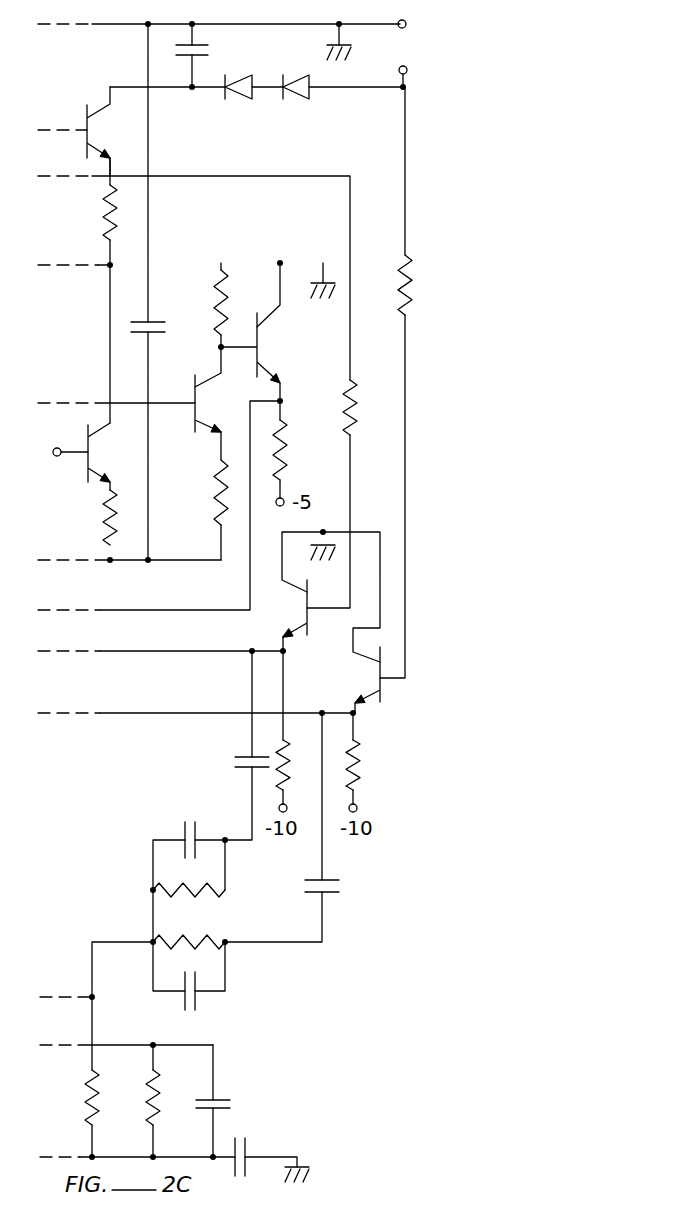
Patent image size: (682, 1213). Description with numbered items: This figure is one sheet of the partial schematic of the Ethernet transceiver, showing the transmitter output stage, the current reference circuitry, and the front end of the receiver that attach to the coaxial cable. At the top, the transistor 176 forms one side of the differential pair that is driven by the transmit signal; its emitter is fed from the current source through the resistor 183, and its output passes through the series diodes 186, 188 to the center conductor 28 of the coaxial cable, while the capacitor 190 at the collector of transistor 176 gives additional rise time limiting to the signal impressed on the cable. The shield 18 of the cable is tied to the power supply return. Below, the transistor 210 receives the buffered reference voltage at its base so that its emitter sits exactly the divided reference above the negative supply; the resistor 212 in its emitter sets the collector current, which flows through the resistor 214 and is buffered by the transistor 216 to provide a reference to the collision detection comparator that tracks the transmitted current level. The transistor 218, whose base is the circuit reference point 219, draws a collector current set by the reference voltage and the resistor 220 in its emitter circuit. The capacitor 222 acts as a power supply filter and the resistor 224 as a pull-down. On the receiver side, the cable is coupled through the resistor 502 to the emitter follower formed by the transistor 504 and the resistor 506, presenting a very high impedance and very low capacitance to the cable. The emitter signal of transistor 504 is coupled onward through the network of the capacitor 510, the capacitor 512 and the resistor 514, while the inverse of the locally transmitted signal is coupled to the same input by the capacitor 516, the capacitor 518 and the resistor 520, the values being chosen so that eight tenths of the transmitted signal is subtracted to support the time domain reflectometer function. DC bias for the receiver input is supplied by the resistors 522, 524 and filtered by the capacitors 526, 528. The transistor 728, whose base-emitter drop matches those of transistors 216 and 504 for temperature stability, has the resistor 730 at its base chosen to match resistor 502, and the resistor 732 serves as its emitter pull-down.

The shield 18 is at (416, 24).
The center conductor 28 is at (418, 69).
The transistor 176 is at (85, 112).
The resistor 183 is at (108, 232).
The diode 186 is at (234, 99).
The diode 188 is at (300, 100).
The capacitor 190 is at (198, 50).
The transistor 210 is at (193, 387).
The resistor 212 is at (215, 497).
The resistor 214 is at (218, 300).
The transistor 216 is at (262, 362).
The transistor 218 is at (92, 452).
The circuit reference point 219 is at (58, 448).
The resistor 220 is at (108, 525).
The capacitor 222 is at (150, 322).
The resistor 224 is at (284, 478).
The resistor 502 is at (400, 268).
The transistor 504 is at (383, 680).
The resistor 506 is at (358, 786).
The capacitor 510 is at (338, 882).
The capacitor 512 is at (200, 1000).
The resistor 514 is at (212, 942).
The capacitor 516 is at (245, 755).
The capacitor 518 is at (183, 826).
The resistor 520 is at (208, 895).
The resistor 522 is at (167, 1103).
The resistor 524 is at (106, 1103).
The capacitor 526 is at (222, 1100).
The capacitor 528 is at (248, 1157).
The transistor 728 is at (302, 618).
The resistor 730 is at (353, 400).
The resistor 732 is at (288, 740).